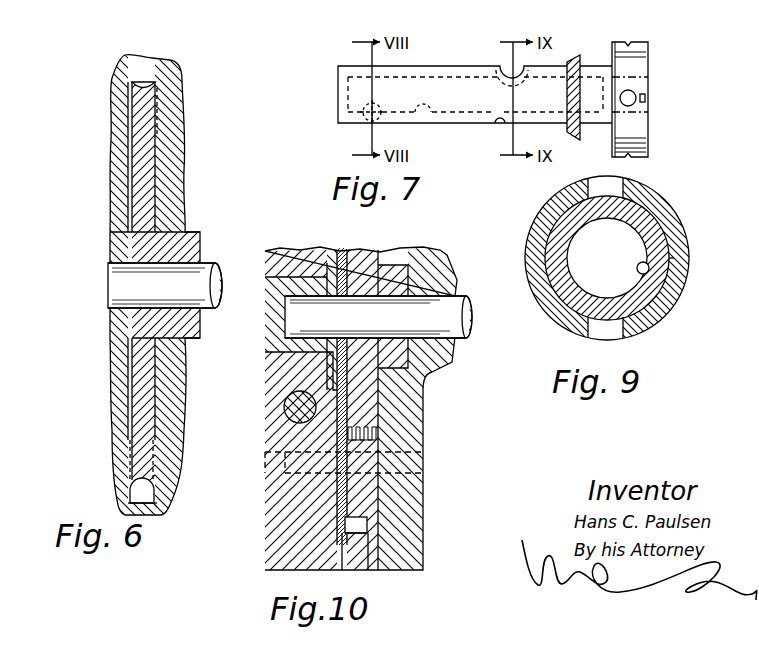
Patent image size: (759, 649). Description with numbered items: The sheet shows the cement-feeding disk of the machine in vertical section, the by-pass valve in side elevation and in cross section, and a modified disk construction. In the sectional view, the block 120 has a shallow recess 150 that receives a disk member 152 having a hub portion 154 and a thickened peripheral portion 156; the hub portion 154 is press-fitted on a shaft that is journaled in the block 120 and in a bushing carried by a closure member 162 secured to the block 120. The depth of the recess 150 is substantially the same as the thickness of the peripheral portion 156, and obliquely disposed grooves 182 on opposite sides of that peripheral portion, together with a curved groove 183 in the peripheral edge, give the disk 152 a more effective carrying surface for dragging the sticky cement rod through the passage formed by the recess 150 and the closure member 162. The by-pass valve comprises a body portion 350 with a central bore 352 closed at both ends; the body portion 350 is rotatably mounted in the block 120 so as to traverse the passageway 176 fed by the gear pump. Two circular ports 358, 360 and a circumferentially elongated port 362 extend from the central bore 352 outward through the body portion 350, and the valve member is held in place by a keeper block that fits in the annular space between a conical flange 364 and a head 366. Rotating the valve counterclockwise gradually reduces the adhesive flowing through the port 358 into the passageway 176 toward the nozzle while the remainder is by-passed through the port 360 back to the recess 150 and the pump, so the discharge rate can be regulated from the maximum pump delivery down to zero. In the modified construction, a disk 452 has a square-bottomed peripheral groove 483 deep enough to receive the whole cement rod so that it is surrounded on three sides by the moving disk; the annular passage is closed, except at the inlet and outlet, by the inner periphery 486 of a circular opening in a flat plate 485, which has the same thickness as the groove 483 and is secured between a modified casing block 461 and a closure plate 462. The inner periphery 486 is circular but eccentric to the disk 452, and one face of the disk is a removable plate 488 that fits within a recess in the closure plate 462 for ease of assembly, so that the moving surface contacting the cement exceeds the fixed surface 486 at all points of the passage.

In FIG. 6, the block 120 is at (188, 380).
In FIG. 9, the block 120 is at (587, 261).
In FIG. 6, the shallow recess 150 is at (165, 510).
In FIG. 6, the disk member 152 is at (128, 176).
In FIG. 6, the hub portion 154 is at (202, 232).
In FIG. 6, the peripheral portion 156 is at (158, 112).
In FIG. 6, the closure member 162 is at (112, 108).
In FIG. 9, the passageway 176 is at (622, 180).
In FIG. 6, the obliquely disposed grooves 182 is at (110, 445).
In FIG. 6, the curved groove 183 is at (143, 80).
In FIG. 7, the body portion 350 is at (432, 66).
In FIG. 9, the body portion 350 is at (665, 283).
In FIG. 7, the central bore 352 is at (428, 118).
In FIG. 9, the central bore 352 is at (669, 262).
In FIG. 7, the circular port 358 is at (501, 123).
In FIG. 9, the circular port 358 is at (638, 274).
In FIG. 7, the circular port 360 is at (366, 120).
In FIG. 7, the circumferentially elongated port 362 is at (502, 68).
In FIG. 9, the circumferentially elongated port 362 is at (646, 228).
In FIG. 7, the conical flange 364 is at (575, 58).
In FIG. 7, the head 366 is at (650, 62).
In FIG. 10, the disk 452 is at (370, 482).
In FIG. 10, the modified casing block 461 is at (413, 400).
In FIG. 10, the closure plate 462 is at (293, 542).
In FIG. 10, the square-bottomed peripheral groove 483 is at (370, 498).
In FIG. 10, the flat plate 485 is at (355, 572).
In FIG. 10, the inner periphery 486 is at (357, 540).
In FIG. 10, the removable plate 488 is at (333, 485).